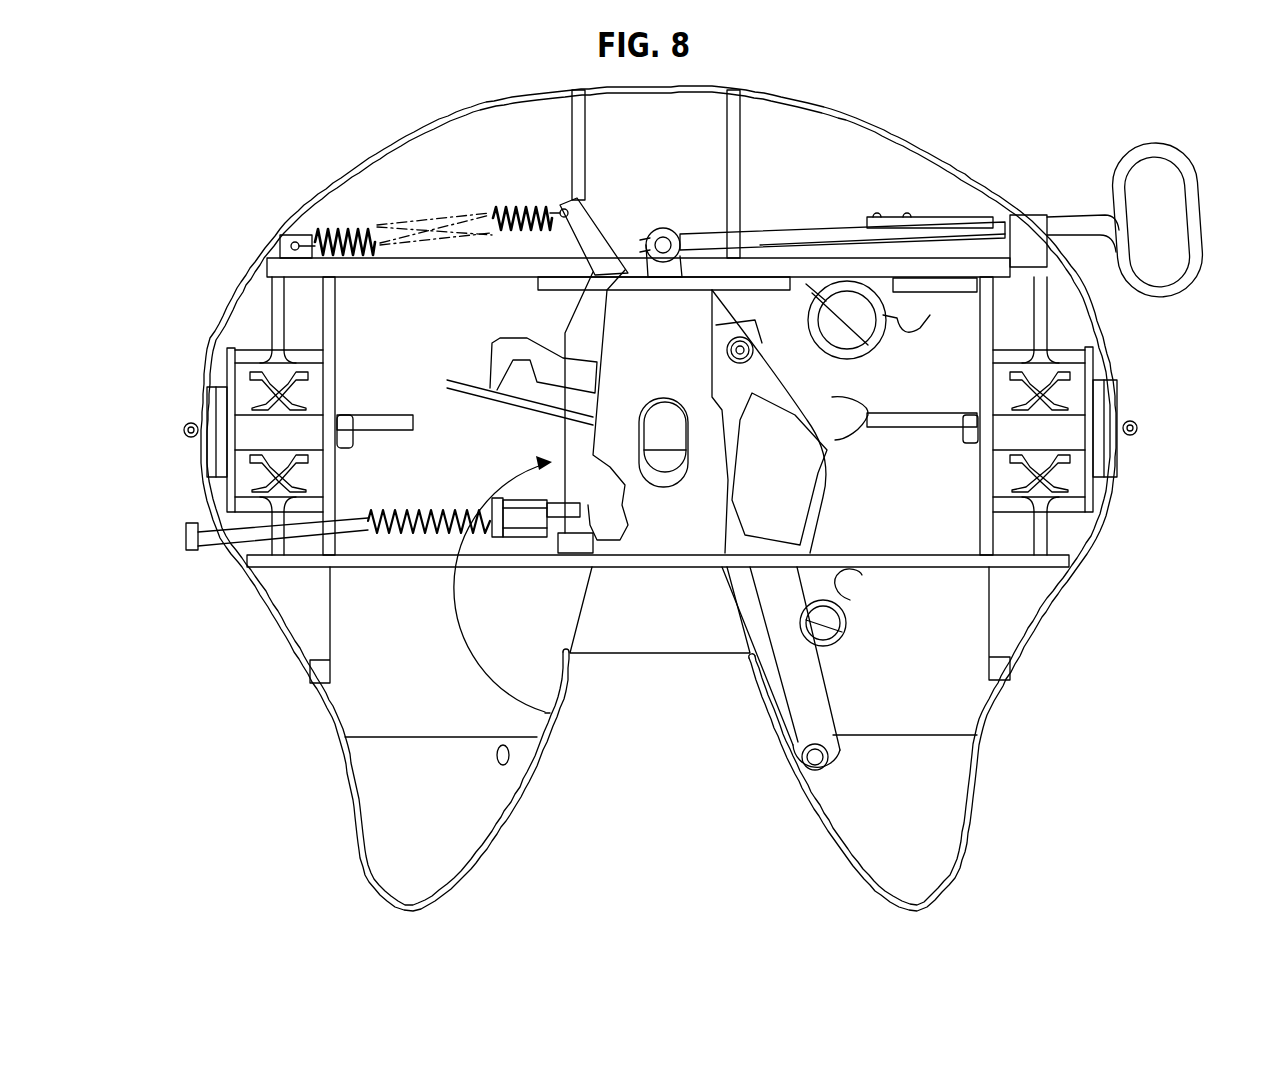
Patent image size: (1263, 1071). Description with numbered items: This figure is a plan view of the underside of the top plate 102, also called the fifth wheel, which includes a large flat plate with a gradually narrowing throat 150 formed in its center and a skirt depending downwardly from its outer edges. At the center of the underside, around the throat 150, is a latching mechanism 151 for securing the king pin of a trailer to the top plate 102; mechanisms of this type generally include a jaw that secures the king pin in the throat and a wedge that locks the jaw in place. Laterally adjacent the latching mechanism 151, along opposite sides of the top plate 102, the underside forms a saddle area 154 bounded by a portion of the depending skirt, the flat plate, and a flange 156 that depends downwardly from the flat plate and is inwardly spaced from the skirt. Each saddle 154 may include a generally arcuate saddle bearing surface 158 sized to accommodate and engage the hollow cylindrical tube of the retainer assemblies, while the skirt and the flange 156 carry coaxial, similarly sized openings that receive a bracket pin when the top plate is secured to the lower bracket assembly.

The top plate 102 is at (400, 128).
The throat 150 is at (208, 465).
The latching mechanism 151 is at (550, 713).
The saddle area 154 is at (275, 480).
The flange 156 is at (322, 315).
The saddle bearing surface 158 is at (240, 378).